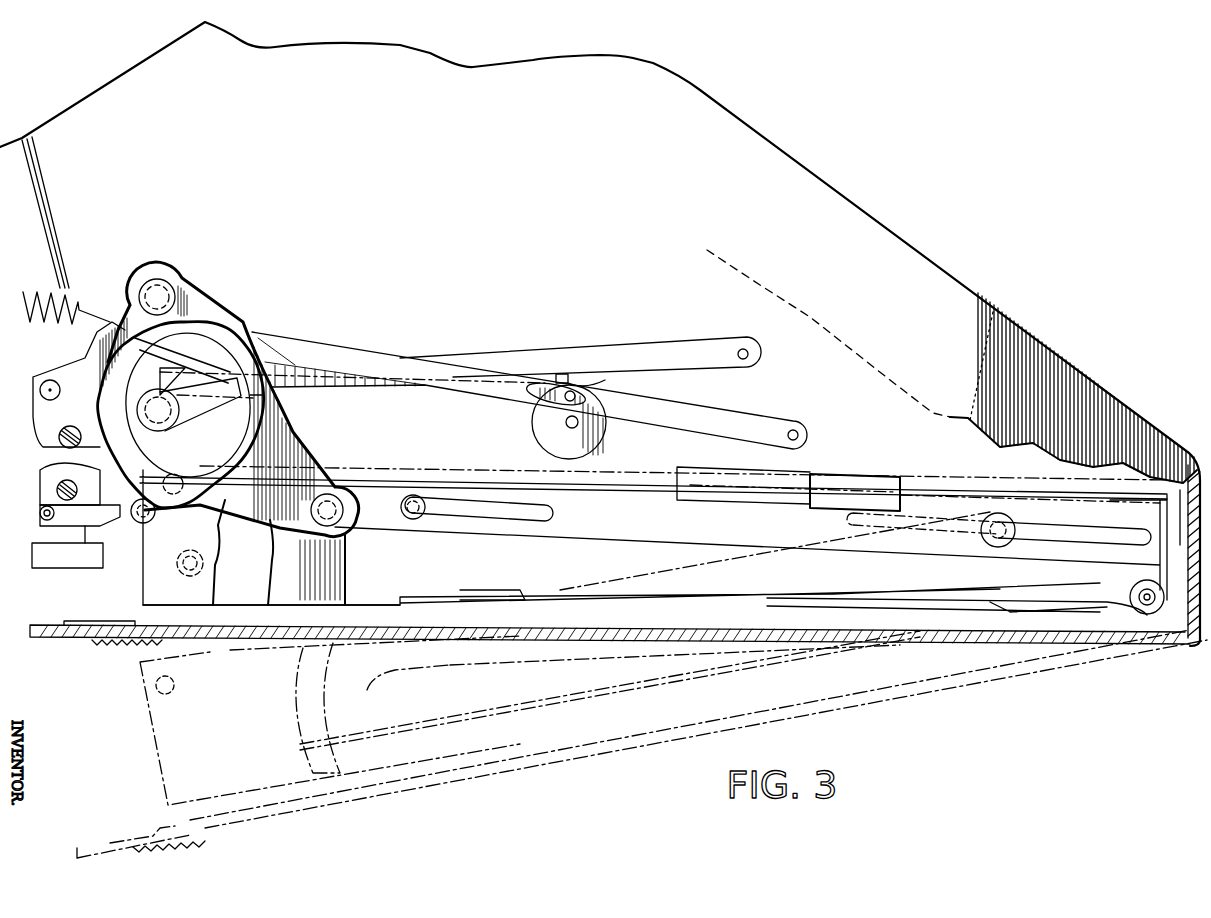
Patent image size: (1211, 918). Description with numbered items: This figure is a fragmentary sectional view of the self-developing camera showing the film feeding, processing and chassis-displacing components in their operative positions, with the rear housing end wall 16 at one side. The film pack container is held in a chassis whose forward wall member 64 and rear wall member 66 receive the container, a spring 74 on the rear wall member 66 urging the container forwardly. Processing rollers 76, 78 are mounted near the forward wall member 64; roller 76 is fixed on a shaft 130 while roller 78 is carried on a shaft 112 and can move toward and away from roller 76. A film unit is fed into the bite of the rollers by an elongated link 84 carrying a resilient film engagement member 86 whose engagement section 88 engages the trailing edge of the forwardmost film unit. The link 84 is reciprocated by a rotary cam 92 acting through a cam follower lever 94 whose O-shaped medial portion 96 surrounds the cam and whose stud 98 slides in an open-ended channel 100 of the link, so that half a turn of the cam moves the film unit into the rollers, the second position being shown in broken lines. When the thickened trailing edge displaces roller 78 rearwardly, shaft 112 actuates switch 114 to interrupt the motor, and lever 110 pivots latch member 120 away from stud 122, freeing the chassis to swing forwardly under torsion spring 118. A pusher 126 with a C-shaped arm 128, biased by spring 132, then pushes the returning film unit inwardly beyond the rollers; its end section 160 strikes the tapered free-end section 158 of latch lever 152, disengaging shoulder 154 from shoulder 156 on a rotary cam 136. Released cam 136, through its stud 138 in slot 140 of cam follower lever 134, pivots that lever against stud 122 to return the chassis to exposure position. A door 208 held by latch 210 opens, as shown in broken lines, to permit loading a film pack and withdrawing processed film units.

The end wall 16 is at (1190, 624).
The forward wall member 64 is at (233, 660).
The rear wall member 66 is at (270, 788).
The spring 74 is at (515, 603).
The processing roller 76 is at (128, 425).
The processing roller 78 is at (42, 465).
The link 84 is at (447, 687).
The film engagement member 86 is at (935, 477).
The engagement section 88 is at (1158, 535).
The rotary cam 92 is at (225, 392).
The cam follower lever 94 is at (296, 432).
The O-shaped medial portion 96 is at (272, 422).
The stud 98 is at (210, 570).
The open-ended channel 100 is at (275, 590).
The lever 110 is at (50, 520).
The shaft 112 is at (42, 492).
The switch 114 is at (52, 570).
The torsion spring 118 is at (912, 640).
The latch member 120 is at (88, 540).
The stud 122 is at (180, 478).
The pusher 126 is at (72, 360).
The C-shaped arm 128 is at (138, 503).
The shaft 130 is at (47, 434).
The spring 132 is at (48, 290).
The cam follower lever 134 is at (718, 405).
The rotary cam 136 is at (533, 424).
The stud 138 is at (540, 401).
The slot 140 is at (600, 398).
The latch lever 152 is at (570, 345).
The shoulder 154 is at (585, 382).
The shoulder 156 is at (556, 377).
The free-end section 158 is at (206, 348).
The end section 160 is at (135, 315).
The door 208 is at (505, 785).
The latch 210 is at (112, 648).